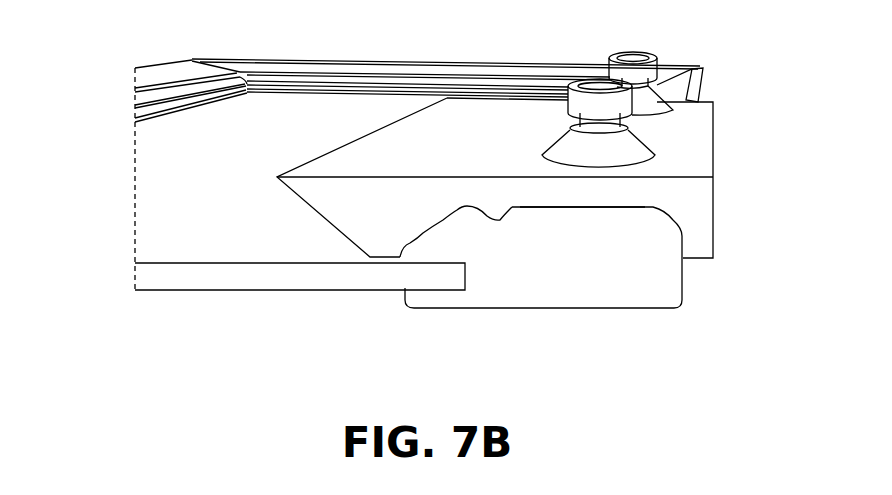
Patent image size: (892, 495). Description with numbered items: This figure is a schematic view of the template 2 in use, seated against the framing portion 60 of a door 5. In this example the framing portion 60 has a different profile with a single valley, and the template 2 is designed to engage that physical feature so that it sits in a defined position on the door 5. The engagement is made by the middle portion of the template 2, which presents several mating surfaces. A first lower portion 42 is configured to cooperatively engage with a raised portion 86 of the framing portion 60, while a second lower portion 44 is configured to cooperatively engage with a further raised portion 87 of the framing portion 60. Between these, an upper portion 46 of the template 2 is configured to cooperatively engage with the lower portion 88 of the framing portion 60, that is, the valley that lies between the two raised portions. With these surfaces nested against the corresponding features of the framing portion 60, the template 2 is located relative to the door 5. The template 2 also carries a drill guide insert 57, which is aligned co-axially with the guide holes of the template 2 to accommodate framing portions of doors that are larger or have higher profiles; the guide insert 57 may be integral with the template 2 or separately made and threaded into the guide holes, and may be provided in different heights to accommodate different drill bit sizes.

The door 5 is at (183, 150).
The template 2 is at (322, 243).
The second lower portion 44 is at (467, 205).
The upper portion 46 is at (502, 218).
The drill guide insert 57 is at (633, 66).
The first lower portion 42 is at (601, 204).
The framing portion 60 is at (645, 289).
The raised portion 87 is at (463, 213).
The lower portion 88 is at (500, 222).
The raised portion 86 is at (553, 208).